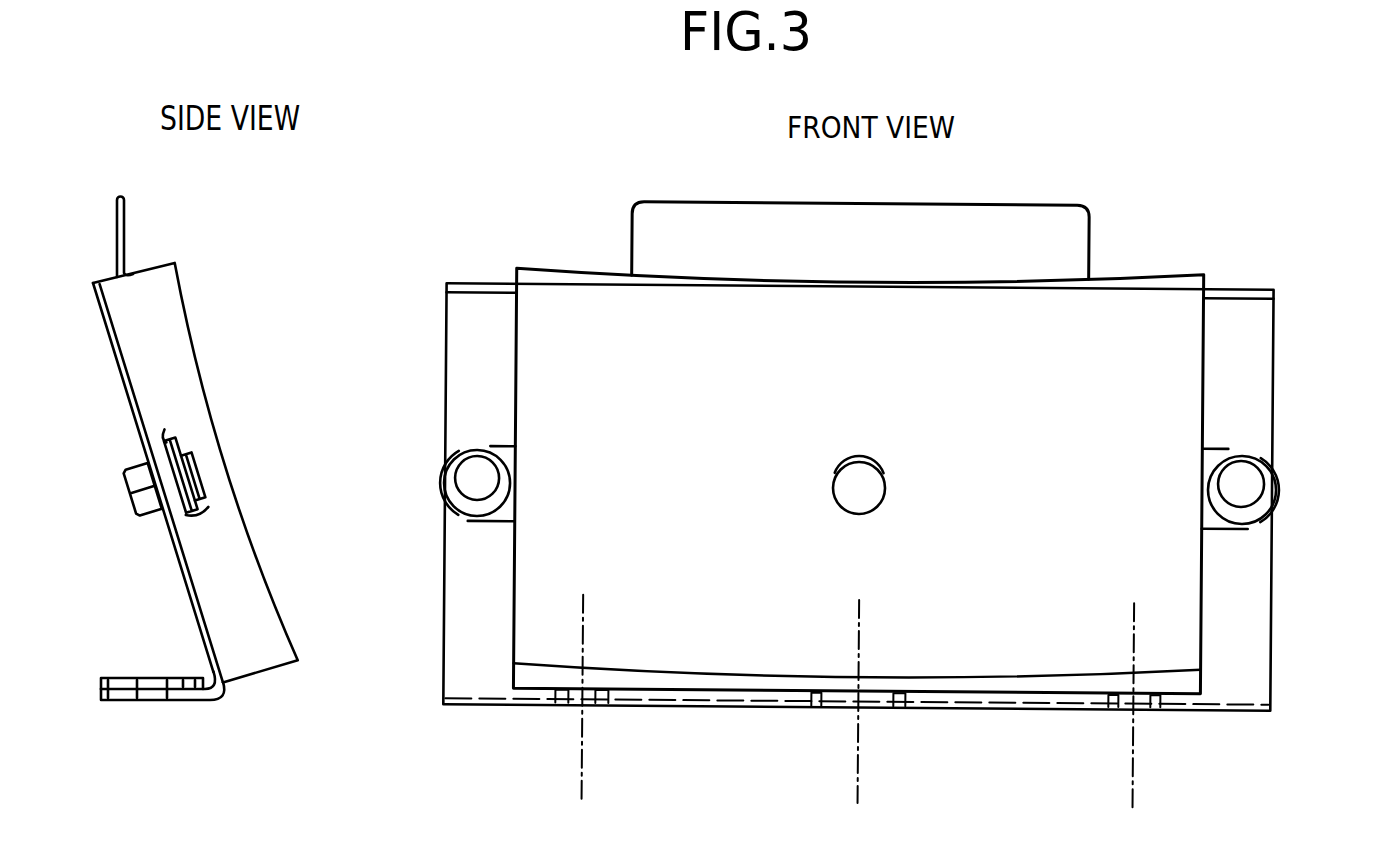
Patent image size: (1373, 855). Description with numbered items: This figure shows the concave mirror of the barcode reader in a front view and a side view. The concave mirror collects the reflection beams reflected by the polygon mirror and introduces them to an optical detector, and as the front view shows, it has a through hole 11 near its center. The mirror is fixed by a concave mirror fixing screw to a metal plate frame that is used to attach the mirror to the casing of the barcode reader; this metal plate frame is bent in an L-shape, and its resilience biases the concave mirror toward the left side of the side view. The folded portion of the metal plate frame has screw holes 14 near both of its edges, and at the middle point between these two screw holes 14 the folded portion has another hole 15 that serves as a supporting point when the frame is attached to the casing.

The through hole 11 is at (887, 495).
The screw holes 14 is at (585, 706).
The hole 15 is at (860, 708).